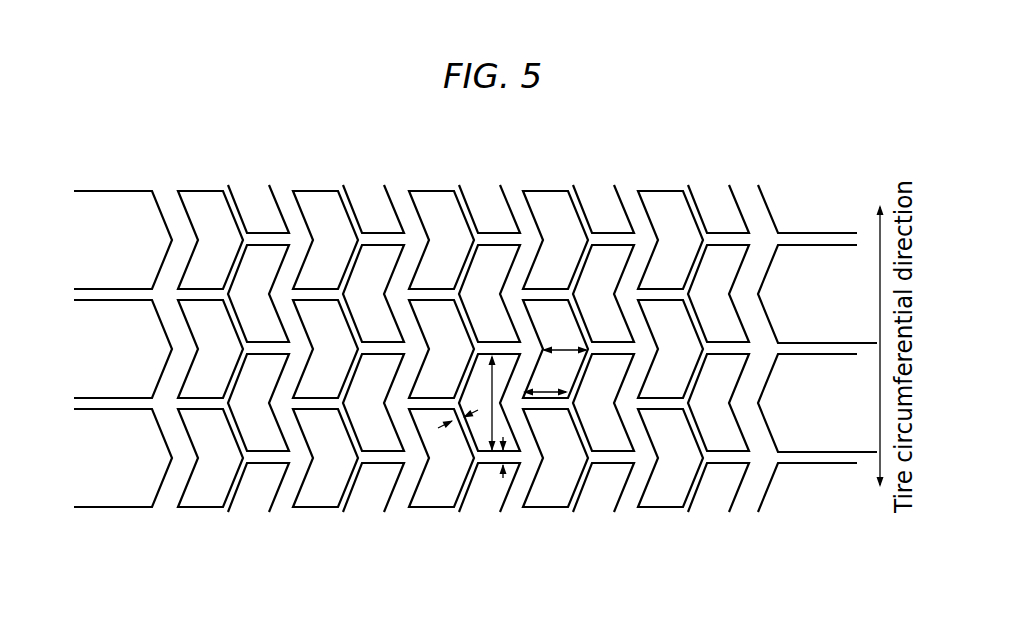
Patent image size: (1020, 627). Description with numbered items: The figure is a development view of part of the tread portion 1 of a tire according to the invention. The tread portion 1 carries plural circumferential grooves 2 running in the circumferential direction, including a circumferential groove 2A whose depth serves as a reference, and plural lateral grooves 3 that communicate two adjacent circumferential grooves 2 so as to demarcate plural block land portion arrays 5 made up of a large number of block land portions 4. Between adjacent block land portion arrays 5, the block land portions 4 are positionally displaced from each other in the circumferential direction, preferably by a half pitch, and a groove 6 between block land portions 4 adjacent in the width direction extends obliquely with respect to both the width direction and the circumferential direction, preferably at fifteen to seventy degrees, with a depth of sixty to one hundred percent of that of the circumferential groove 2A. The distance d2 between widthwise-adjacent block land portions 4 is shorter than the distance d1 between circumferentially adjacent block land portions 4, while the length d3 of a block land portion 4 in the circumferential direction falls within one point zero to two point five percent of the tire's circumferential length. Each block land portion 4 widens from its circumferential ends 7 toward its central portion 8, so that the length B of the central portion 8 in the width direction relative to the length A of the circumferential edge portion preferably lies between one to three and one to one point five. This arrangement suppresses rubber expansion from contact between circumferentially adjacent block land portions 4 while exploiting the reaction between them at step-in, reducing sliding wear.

The tread portion 1 is at (700, 158).
The circumferential groove 2 is at (452, 187).
The circumferential groove 2A is at (403, 204).
The lateral groove 3 is at (428, 293).
The block land portion 4 is at (457, 253).
The block land portion array 5 is at (432, 516).
The groove between block land portions adjacent in the width direction 6 is at (467, 453).
The end of the block land portion in the circumferential direction 7 is at (543, 191).
The central portion of the block land portion 8 is at (602, 233).
The distance between circumferentially adjacent block land portions d1 is at (508, 462).
The distance between widthwise adjacent block land portions d2 is at (453, 402).
The length of the block land portion in the circumferential direction d3 is at (484, 403).
The length of the circumferential edge portion of the block land portion in the widt A is at (545, 380).
The length of the central portion of the block land portion in the width direction B is at (565, 337).